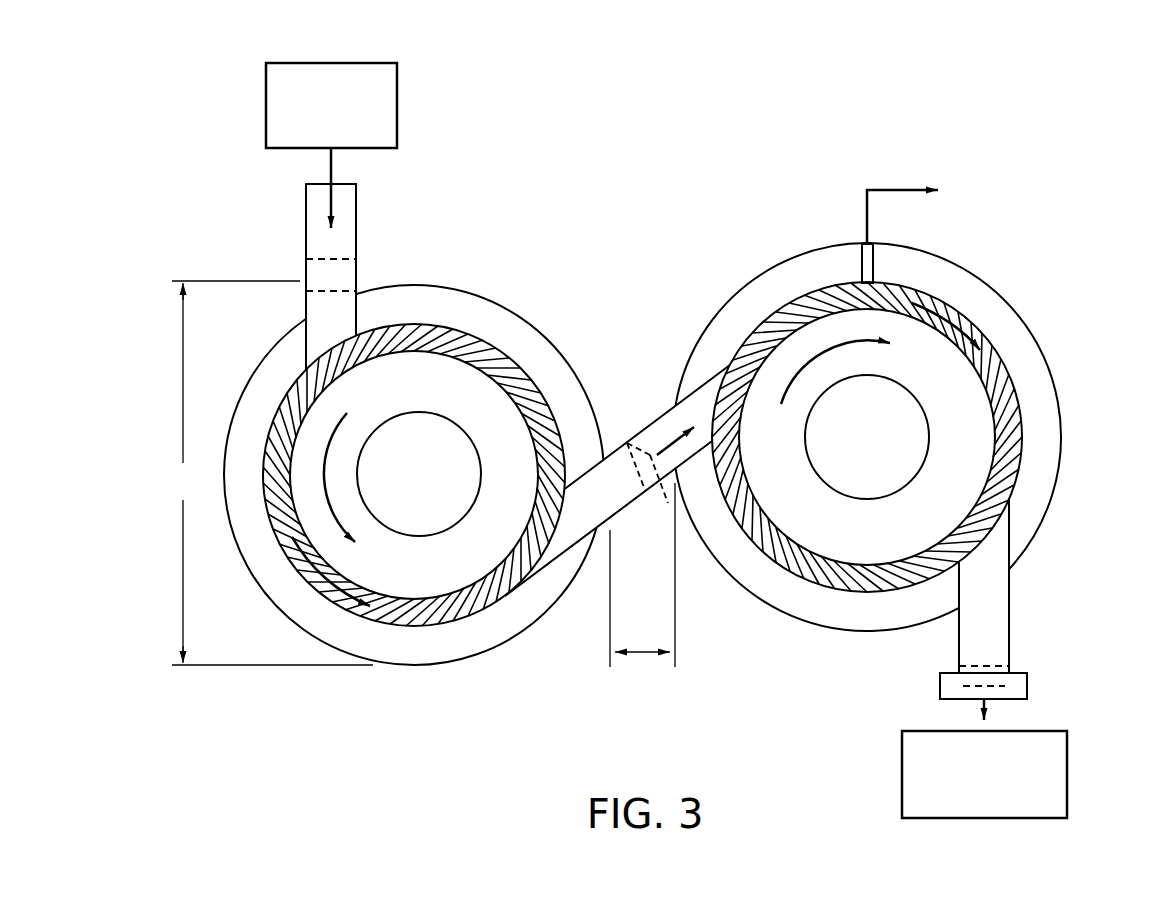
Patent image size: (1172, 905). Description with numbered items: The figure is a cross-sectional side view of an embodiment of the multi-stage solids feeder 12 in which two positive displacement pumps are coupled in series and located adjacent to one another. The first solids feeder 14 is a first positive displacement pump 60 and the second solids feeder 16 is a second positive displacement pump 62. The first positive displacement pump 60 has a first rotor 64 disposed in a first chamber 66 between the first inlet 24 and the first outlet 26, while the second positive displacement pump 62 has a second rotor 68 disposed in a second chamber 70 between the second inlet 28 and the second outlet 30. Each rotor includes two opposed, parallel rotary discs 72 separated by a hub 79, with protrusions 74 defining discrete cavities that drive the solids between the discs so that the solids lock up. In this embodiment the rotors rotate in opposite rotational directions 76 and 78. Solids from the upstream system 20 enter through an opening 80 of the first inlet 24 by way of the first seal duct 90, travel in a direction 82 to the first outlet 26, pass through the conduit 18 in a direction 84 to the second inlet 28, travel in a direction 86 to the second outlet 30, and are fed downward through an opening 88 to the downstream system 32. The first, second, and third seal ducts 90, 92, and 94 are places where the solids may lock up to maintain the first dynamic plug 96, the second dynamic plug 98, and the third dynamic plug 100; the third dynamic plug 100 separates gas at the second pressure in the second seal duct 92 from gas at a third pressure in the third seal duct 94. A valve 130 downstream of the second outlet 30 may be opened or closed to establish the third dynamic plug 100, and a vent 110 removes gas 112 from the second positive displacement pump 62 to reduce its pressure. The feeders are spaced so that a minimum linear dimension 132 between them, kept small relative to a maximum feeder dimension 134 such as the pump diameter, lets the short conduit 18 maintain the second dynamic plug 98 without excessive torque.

The multi-stage solids feeder 12 is at (641, 142).
The first solids feeder 14 is at (397, 461).
The second solids feeder 16 is at (924, 437).
The conduit 18 is at (635, 497).
The upstream system 20 is at (398, 104).
The first inlet 24 is at (360, 327).
The first outlet 26 is at (524, 597).
The second inlet 28 is at (723, 357).
The second outlet 30 is at (1010, 497).
The downstream system 32 is at (1067, 772).
The first positive displacement pump 60 is at (397, 461).
The second positive displacement pump 62 is at (924, 437).
The first rotor 64 is at (437, 319).
The first chamber 66 is at (503, 300).
The second rotor 68 is at (761, 317).
The second chamber 70 is at (990, 290).
The rotary discs 72 is at (382, 627).
The protrusions 74 is at (540, 378).
The rotational direction 76 is at (347, 412).
The rotational direction 78 is at (781, 398).
The hub 79 is at (643, 455).
The opening 80 is at (323, 184).
The direction 82 is at (313, 590).
The direction 84 is at (666, 446).
The direction 86 is at (920, 300).
The opening 88 is at (950, 697).
The first seal duct 90 is at (337, 259).
The second seal duct 92 is at (654, 500).
The third seal duct 94 is at (1023, 597).
The first dynamic plug 96 is at (318, 256).
The second dynamic plug 98 is at (627, 442).
The third dynamic plug 100 is at (985, 663).
The vent 110 is at (875, 268).
The gas 112 is at (897, 188).
The valve 130 is at (1027, 683).
The minimum linear dimension 132 is at (643, 655).
The maximum feeder dimension 134 is at (265, 473).